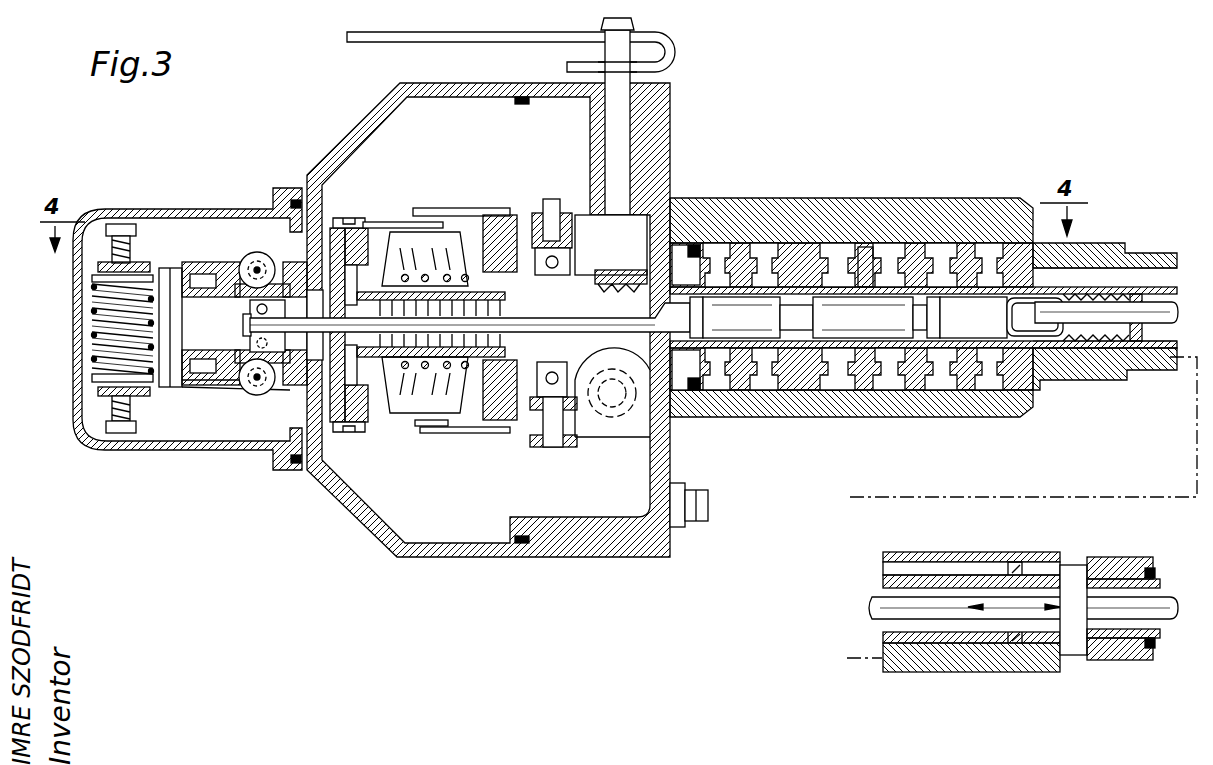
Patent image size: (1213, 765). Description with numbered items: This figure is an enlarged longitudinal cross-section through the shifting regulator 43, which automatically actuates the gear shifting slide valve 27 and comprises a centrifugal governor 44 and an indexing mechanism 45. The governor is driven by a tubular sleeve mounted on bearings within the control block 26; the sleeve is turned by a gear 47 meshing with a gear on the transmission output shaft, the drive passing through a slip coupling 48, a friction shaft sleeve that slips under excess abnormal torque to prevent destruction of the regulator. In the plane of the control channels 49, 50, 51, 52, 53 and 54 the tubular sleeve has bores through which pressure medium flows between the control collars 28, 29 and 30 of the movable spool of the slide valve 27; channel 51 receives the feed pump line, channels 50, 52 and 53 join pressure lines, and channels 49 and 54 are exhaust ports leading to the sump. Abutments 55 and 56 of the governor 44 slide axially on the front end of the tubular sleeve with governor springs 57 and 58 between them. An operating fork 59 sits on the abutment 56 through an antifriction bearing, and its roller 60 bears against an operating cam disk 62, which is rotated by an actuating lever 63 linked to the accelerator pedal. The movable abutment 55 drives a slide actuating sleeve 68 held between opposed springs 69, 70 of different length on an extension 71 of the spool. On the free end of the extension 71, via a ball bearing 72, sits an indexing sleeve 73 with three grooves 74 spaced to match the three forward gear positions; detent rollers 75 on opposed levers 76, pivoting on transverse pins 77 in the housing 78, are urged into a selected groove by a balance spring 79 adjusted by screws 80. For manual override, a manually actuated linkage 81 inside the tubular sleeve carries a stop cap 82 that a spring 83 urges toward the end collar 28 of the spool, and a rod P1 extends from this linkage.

The control block 26 is at (870, 247).
The gear shifting slide valve 27 is at (871, 340).
The control collar 28 is at (918, 307).
The control collar 29 is at (800, 307).
The control collar 30 is at (695, 303).
The shifting regulator 43 is at (372, 542).
The centrifugal governor 44 is at (420, 208).
The indexing mechanism 45 is at (227, 405).
The gear 47 is at (1113, 560).
The slip coupling 48 is at (1113, 660).
The control channel 49 is at (720, 385).
The control channel 50 is at (769, 385).
The control channel 51 is at (840, 385).
The control channel 52 is at (893, 385).
The control channel 53 is at (940, 385).
The control channel 54 is at (990, 385).
The abutment 55 is at (338, 222).
The abutment 56 is at (491, 222).
The governor spring 57 is at (406, 284).
The governor spring 58 is at (416, 356).
The operating fork 59 is at (538, 448).
The roller 60 is at (540, 203).
The operating cam disk 62 is at (597, 222).
The actuating lever 63 is at (617, 121).
The slide actuating sleeve 68 is at (327, 386).
The spring 69 is at (287, 287).
The spring 70 is at (451, 358).
The extension 71 is at (612, 320).
The ball bearing 72 is at (262, 343).
The indexing sleeve 73 is at (196, 288).
The groove 74 is at (215, 285).
The detent member 75 is at (270, 382).
The lever 76 is at (167, 398).
The transverse pin 77 is at (186, 390).
The housing 78 is at (312, 161).
The balance spring 79 is at (140, 317).
The screw 80 is at (118, 242).
The manually actuated linkage 81 is at (946, 640).
The stop cap 82 is at (1008, 310).
The spring 83 is at (1118, 330).
The rod P1 is at (1162, 302).